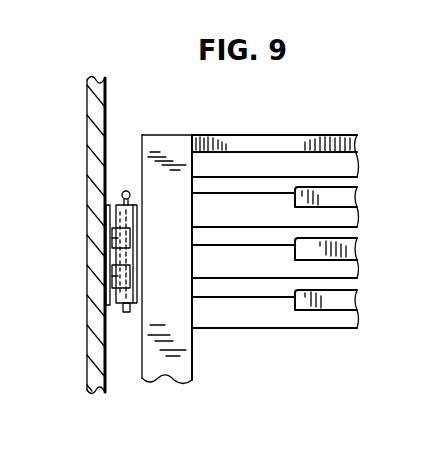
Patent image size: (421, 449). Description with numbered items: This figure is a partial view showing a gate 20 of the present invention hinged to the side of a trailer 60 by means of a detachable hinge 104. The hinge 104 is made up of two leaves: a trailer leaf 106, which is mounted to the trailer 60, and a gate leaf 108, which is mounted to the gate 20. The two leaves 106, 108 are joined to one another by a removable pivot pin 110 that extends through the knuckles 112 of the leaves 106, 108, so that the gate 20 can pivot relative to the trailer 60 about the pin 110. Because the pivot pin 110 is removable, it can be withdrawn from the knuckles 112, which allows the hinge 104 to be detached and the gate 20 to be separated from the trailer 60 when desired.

The gate 20 is at (233, 141).
The trailer 60 is at (87, 147).
The detachable hinge 104 is at (124, 327).
The trailer leaf 106 is at (108, 255).
The gate leaf 108 is at (156, 218).
The removable pivot pin 110 is at (124, 190).
The knuckles 112 is at (122, 240).